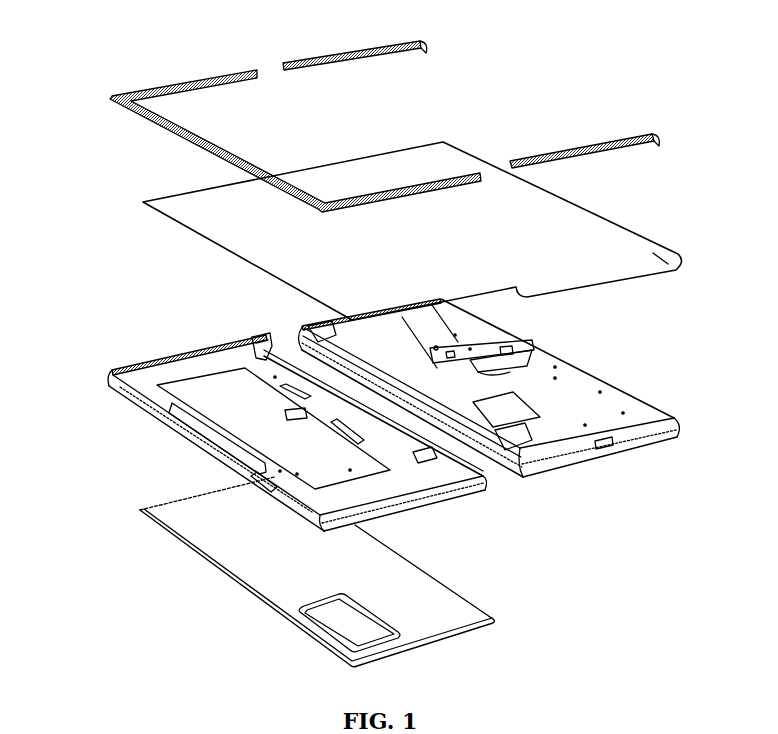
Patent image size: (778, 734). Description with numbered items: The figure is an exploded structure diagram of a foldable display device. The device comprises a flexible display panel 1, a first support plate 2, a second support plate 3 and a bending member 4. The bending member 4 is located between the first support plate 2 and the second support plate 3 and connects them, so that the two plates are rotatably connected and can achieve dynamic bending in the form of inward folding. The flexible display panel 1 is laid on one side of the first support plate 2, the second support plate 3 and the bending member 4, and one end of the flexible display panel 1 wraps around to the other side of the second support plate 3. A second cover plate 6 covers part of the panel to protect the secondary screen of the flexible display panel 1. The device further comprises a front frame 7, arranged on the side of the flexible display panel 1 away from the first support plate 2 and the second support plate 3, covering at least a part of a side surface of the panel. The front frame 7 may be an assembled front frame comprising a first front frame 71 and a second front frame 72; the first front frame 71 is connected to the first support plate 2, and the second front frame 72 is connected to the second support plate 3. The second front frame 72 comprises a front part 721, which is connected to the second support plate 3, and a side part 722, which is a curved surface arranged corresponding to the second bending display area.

The flexible display panel 1 is at (239, 255).
The first support plate 2 is at (127, 370).
The second support plate 3 is at (598, 402).
The bending member 4 is at (519, 338).
The second cover plate 6 is at (213, 519).
The front frame 7 is at (384, 108).
The first front frame 71 is at (217, 78).
The second front frame 72 is at (376, 45).
The front part 721 is at (355, 55).
The side part 722 is at (423, 48).